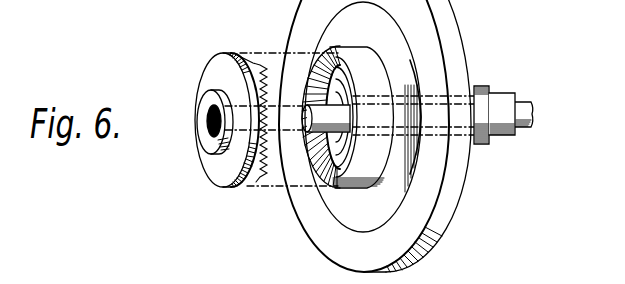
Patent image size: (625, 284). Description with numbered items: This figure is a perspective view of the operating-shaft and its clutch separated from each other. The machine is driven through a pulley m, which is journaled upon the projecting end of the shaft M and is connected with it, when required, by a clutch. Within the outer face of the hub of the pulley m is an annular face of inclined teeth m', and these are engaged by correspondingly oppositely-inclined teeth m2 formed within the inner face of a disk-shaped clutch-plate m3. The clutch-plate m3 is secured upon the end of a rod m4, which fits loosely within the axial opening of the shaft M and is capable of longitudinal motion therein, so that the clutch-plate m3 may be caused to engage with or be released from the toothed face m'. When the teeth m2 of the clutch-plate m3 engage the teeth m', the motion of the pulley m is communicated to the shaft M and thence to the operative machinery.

The pulley m is at (375, 136).
The inclined teeth m' is at (347, 117).
The oppositely-inclined teeth m2 is at (255, 80).
The clutch-plate m3 is at (227, 120).
The rod m4 is at (554, 110).
The shaft M is at (487, 86).